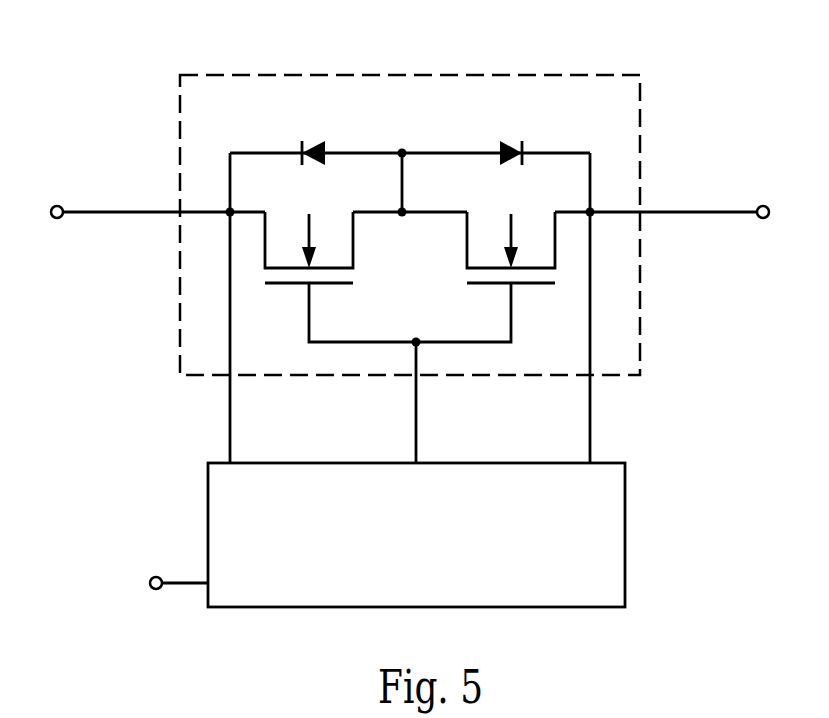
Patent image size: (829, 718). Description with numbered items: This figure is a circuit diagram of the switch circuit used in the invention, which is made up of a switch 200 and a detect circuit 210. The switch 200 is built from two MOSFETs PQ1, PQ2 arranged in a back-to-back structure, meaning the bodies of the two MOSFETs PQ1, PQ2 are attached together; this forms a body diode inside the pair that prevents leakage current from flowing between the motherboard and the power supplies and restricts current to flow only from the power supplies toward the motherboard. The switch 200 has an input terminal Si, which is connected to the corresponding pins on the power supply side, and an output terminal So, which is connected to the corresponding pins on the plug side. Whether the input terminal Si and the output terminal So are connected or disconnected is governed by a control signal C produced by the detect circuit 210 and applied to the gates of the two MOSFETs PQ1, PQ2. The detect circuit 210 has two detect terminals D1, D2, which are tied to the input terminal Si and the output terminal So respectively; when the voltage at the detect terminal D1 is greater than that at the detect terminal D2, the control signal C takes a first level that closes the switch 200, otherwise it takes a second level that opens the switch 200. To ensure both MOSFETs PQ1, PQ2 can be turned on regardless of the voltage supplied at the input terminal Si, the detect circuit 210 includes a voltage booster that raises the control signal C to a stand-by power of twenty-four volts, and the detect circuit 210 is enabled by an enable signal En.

The switch 200 is at (410, 206).
The detect circuit 210 is at (548, 597).
The MOSFET PQ1 is at (309, 231).
The MOSFET PQ2 is at (511, 231).
The detect terminal D1 is at (252, 308).
The detect terminal D2 is at (610, 308).
The control signal C is at (425, 402).
The enable signal En is at (201, 582).
The input terminal Si is at (132, 219).
The output terminal So is at (679, 199).